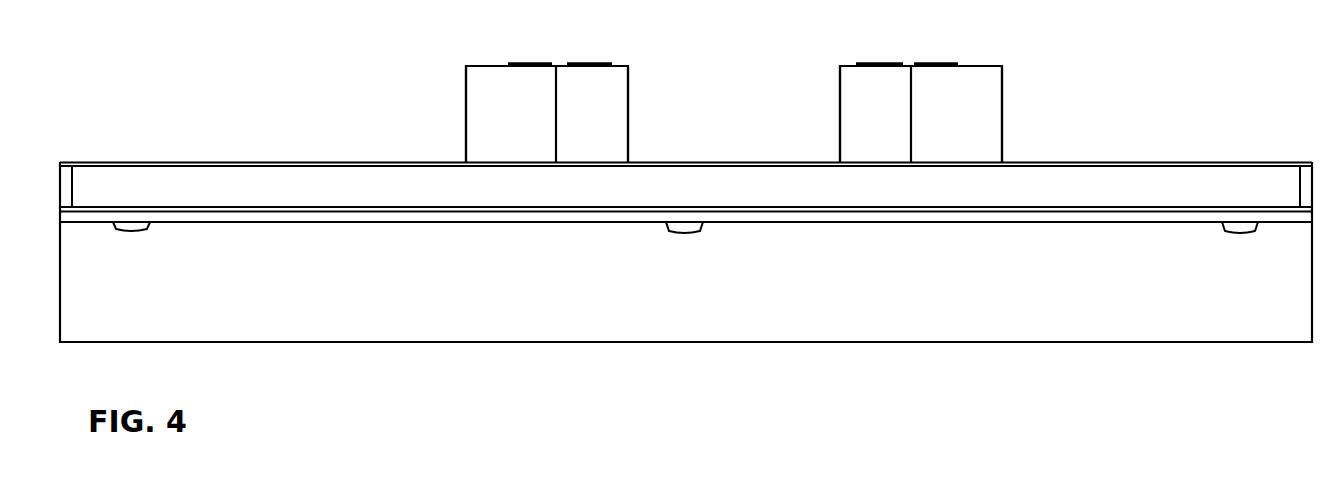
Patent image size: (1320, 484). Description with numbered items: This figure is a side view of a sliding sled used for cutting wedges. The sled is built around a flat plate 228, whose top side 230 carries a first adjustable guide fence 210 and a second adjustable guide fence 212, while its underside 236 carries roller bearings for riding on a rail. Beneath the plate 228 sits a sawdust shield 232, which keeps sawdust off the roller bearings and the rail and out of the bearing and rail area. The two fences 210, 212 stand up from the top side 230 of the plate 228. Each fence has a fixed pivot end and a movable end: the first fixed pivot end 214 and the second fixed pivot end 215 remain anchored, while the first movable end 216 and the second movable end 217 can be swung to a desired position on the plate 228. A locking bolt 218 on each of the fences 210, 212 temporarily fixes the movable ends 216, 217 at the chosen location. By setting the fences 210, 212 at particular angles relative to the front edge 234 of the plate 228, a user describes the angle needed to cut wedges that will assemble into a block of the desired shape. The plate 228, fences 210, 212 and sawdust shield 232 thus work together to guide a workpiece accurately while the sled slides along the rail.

The first adjustable guide fence 210 is at (848, 73).
The second adjustable guide fence 212 is at (625, 74).
The first fixed pivot end 214 is at (846, 134).
The second fixed pivot end 215 is at (625, 119).
The first movable end 216 is at (990, 118).
The second movable end 217 is at (467, 129).
The locking bolt 218 is at (533, 63).
The flat plate 228 is at (230, 188).
The top side 230 is at (95, 162).
The sawdust shield 232 is at (578, 300).
The front edge 234 is at (1113, 185).
The underside 236 is at (402, 212).